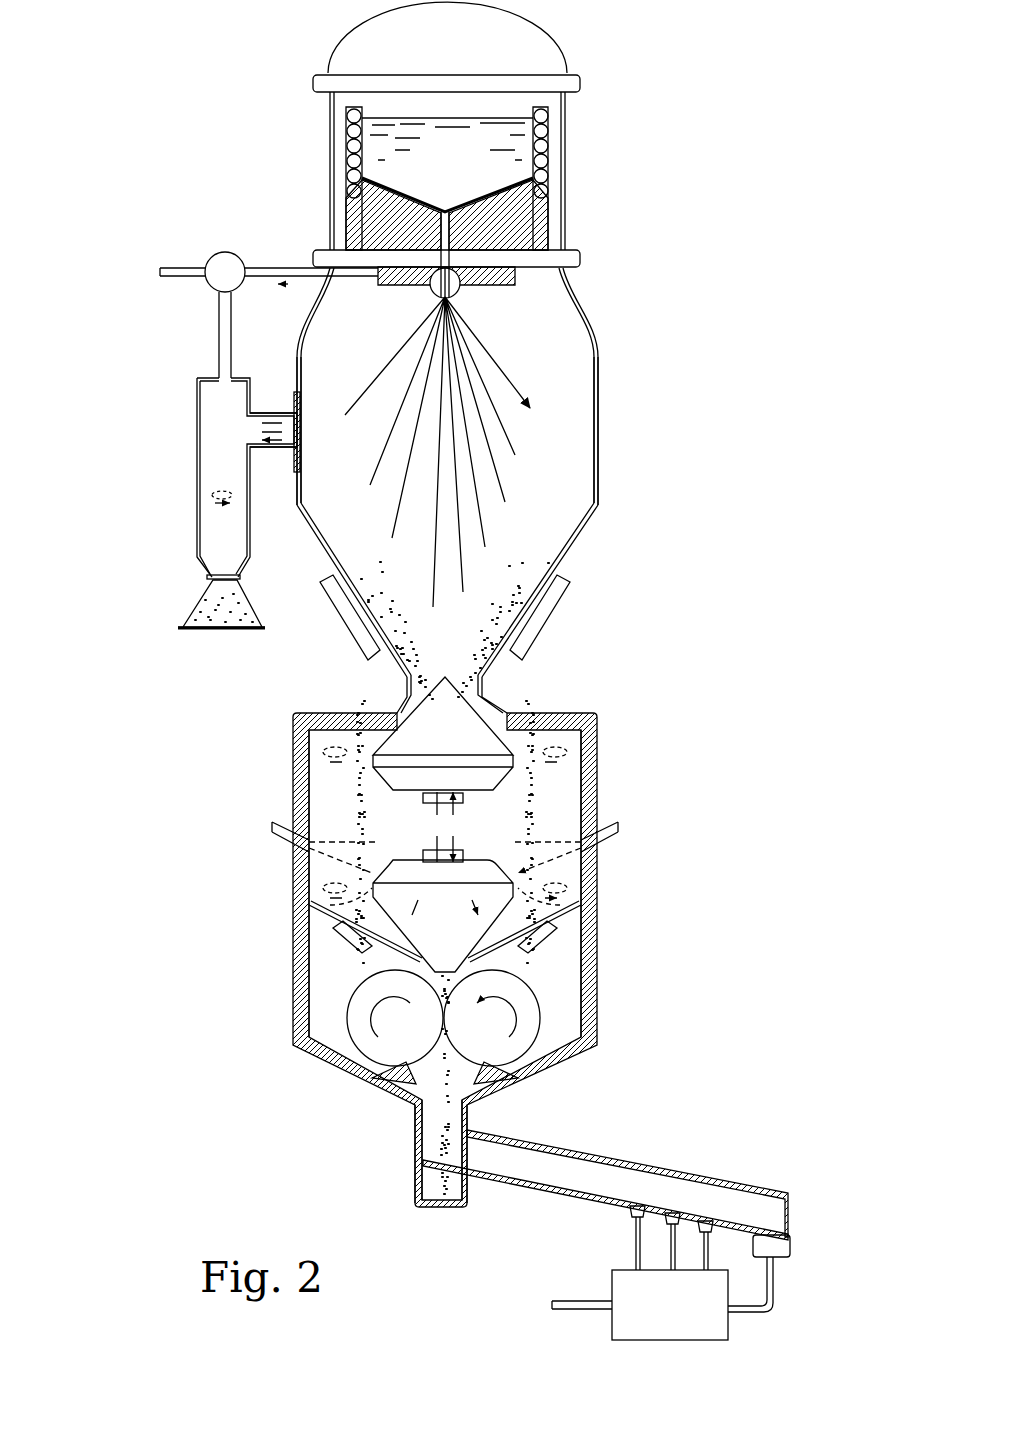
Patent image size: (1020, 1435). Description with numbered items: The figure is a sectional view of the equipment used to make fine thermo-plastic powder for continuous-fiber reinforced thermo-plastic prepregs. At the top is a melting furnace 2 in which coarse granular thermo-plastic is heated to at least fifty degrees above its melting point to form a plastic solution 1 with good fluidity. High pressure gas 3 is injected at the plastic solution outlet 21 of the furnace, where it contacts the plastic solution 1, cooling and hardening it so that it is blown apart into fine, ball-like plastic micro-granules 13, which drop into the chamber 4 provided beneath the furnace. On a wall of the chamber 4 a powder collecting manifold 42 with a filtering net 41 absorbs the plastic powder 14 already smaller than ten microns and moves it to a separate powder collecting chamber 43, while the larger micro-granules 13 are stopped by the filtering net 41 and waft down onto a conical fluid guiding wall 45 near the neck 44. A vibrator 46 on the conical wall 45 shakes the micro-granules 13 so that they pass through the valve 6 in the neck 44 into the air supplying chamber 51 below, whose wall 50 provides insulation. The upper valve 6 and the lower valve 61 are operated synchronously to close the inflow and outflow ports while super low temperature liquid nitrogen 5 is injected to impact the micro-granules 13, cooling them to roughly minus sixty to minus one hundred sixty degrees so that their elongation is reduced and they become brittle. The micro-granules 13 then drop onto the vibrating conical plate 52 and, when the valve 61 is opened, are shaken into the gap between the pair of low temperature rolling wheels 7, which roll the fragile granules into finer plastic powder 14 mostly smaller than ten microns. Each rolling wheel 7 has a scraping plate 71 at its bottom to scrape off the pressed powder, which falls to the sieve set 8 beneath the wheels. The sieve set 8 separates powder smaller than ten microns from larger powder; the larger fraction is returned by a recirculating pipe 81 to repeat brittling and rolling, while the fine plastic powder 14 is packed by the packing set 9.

The plastic solution 1 is at (452, 130).
The melting furnace 2 is at (537, 222).
The plastic solution outlet 21 is at (460, 290).
The high pressure gas 3 is at (290, 270).
The chamber 4 is at (600, 413).
The filtering net 41 is at (302, 432).
The powder collecting manifold 42 is at (278, 422).
The powder collecting chamber 43 is at (232, 557).
The neck 44 is at (483, 688).
The conical fluid guiding wall 45 is at (564, 570).
The vibrator 46 is at (540, 624).
The plastic micro-granules 13 is at (400, 668).
The plastic powder 14 is at (233, 630).
The super low temperature liquid nitrogen 5 is at (333, 838).
The wall 50 is at (590, 723).
The air supplying chamber 51 is at (557, 803).
The conical plate 52 is at (558, 933).
The valve 6 is at (443, 746).
The valve 61 is at (443, 904).
The rolling wheels 7 is at (515, 996).
The scraping plate 71 is at (508, 1082).
The sieve set 8 is at (616, 1192).
The recirculating pipe 81 is at (772, 1283).
The packing set 9 is at (640, 1305).